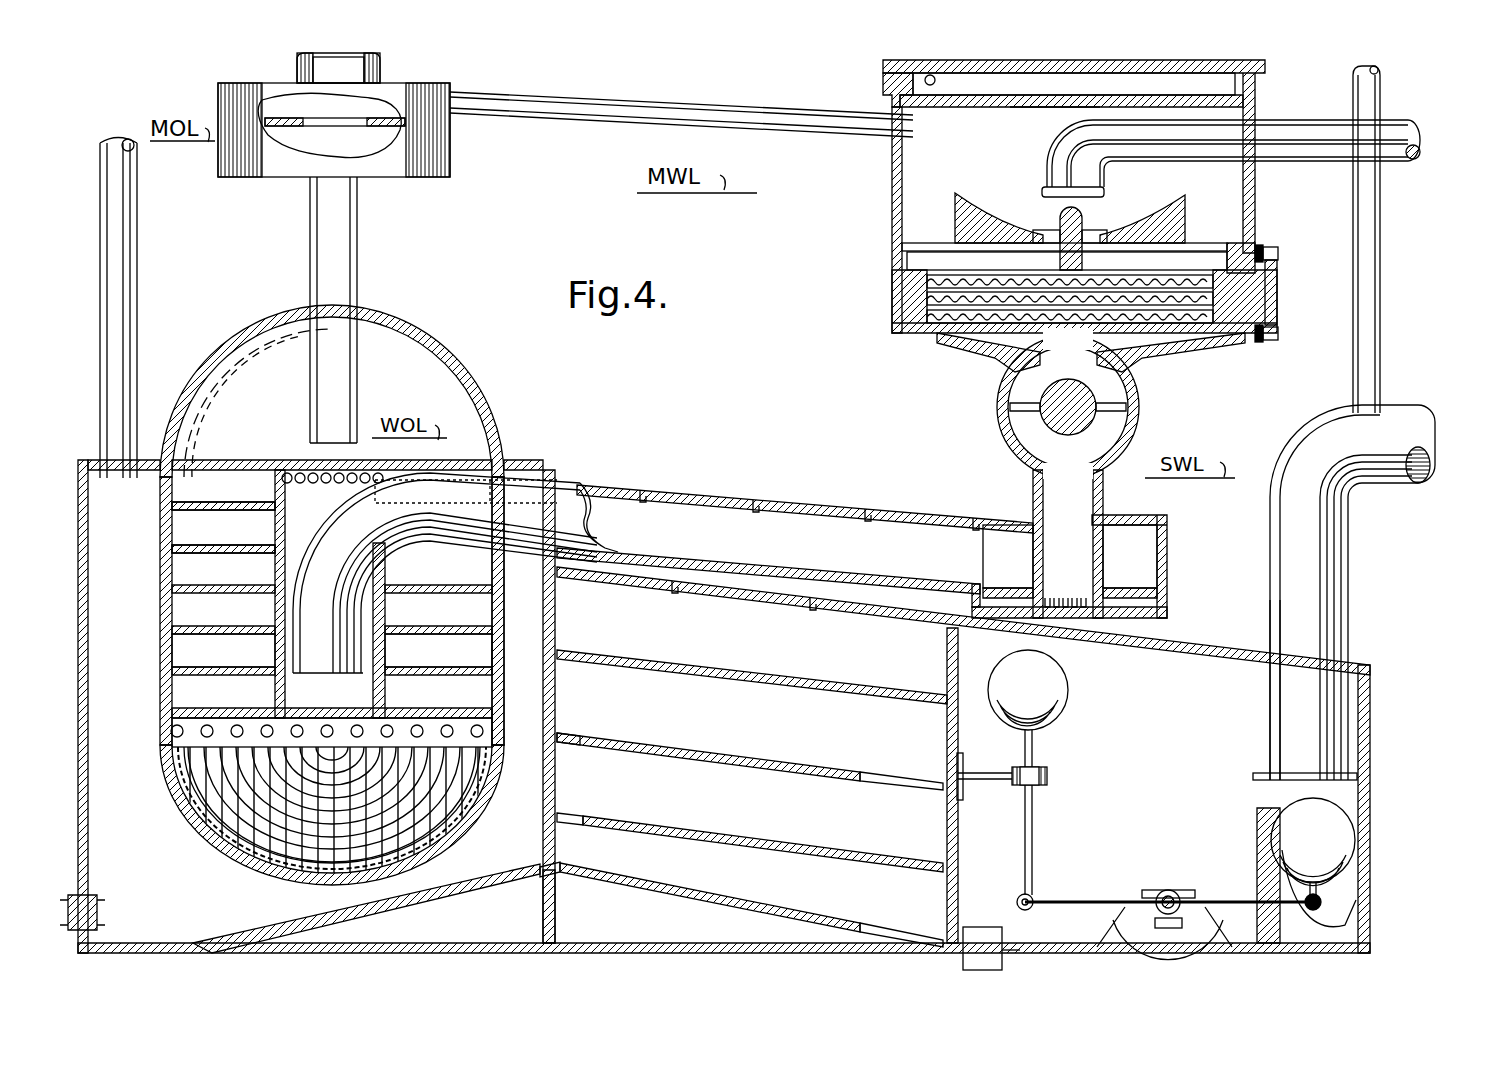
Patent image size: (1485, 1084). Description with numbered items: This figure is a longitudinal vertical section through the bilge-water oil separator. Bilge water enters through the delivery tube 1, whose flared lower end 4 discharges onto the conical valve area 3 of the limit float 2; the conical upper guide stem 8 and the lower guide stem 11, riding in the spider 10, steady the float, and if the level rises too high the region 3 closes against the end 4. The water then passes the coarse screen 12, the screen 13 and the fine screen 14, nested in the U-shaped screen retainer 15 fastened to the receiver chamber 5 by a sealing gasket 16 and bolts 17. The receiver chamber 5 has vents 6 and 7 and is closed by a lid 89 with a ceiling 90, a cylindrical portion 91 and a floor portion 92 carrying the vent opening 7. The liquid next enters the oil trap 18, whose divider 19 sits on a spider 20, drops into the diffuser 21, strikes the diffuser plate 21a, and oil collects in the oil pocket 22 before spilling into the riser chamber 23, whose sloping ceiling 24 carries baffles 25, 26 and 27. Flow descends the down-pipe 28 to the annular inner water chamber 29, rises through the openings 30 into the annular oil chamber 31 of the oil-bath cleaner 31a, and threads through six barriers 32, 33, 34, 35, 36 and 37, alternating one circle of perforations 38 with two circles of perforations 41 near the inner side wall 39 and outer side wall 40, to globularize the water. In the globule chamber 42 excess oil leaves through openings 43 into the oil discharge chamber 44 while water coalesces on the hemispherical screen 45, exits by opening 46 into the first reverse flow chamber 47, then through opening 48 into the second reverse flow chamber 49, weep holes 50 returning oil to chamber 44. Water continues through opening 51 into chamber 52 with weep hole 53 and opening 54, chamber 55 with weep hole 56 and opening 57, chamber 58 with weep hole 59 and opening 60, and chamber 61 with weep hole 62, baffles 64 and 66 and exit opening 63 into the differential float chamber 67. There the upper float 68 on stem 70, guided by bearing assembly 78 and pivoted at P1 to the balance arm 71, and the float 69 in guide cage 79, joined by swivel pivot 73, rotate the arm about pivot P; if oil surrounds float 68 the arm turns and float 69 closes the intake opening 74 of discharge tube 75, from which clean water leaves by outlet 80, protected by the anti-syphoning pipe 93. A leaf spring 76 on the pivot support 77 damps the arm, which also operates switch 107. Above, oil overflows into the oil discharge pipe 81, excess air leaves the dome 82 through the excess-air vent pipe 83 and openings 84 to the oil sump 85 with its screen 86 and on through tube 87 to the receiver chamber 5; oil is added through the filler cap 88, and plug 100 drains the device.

The delivery tube 1 is at (1405, 120).
The limit float 2 is at (1180, 216).
The conical valve area 3 is at (963, 212).
The lower end of delivery tube 4 is at (1095, 190).
The receiver chamber 5 is at (892, 160).
The vent 6 is at (1070, 107).
The vent opening 7 is at (935, 80).
The upper guide stem 8 is at (1058, 216).
The spider 10 is at (945, 243).
The lower guide stem 11 is at (1083, 262).
The coarse screen 12 is at (985, 270).
The screen 13 is at (1150, 292).
The fine screen 14 is at (1088, 323).
The screen retainer 15 is at (1265, 342).
The sealing gasket 16 is at (1265, 246).
The bolts 17 is at (1283, 338).
The oil trap 18 is at (1139, 397).
The divider 19 is at (1075, 436).
The spider 20 is at (1110, 418).
The diffuser 21 is at (1167, 540).
The diffuser plate 21a is at (1167, 612).
The oil pocket 22 is at (1141, 552).
The riser chamber 23 is at (919, 565).
The sloping ceiling 24 is at (920, 520).
The baffle 25 is at (862, 527).
The baffle 26 is at (755, 516).
The baffle 27 is at (646, 510).
The down-pipe 28 is at (335, 673).
The annular inner water chamber 29 is at (318, 702).
The openings 30 is at (328, 484).
The annular oil chamber 31 is at (436, 662).
The oil-bath water cleaner 31a is at (505, 452).
The first barrier 32 is at (265, 502).
The second barrier 33 is at (268, 545).
The third barrier 34 is at (236, 585).
The fourth barrier 35 is at (267, 626).
The fifth barrier 36 is at (203, 667).
The sixth barrier 37 is at (233, 708).
The perforations 38 is at (444, 586).
The inner side wall 39 is at (285, 515).
The outer side wall 40 is at (160, 612).
The perforations 41 is at (456, 626).
The globule chamber 42 is at (300, 770).
The openings 43 is at (172, 735).
The oil discharge chamber 44 is at (177, 858).
The hemispherical screen 45 is at (176, 792).
The exit opening 46 is at (282, 926).
The first reverse flow chamber 47 is at (444, 926).
The exit opening 48 is at (543, 912).
The second reverse flow chamber 49 is at (609, 922).
The weep holes 50 is at (572, 865).
The exit opening 51 is at (910, 930).
The chamber 52 is at (769, 888).
The weep hole 53 is at (545, 822).
The exit flow opening 54 is at (646, 832).
The chamber 55 is at (712, 808).
The weep hole 56 is at (557, 738).
The exit opening 57 is at (900, 780).
The chamber 58 is at (727, 728).
The weep hole 59 is at (543, 665).
The exit opening 60 is at (640, 660).
The chamber 61 is at (747, 660).
The weep hole 62 is at (557, 572).
The exit opening 63 is at (947, 667).
The baffle 64 is at (672, 605).
The baffle 66 is at (808, 625).
The differential float chamber 67 is at (1155, 755).
The upper float 68 is at (1066, 680).
The float 69 is at (1320, 801).
The stem 70 is at (1032, 803).
The balance arm 71 is at (1095, 897).
The swivel pivot 73 is at (1313, 910).
The intake opening 74 is at (1258, 781).
The discharge tube 75 is at (1270, 710).
The leaf spring 76 is at (1110, 905).
The pivot support 77 is at (1148, 925).
The bearing assembly 78 is at (1052, 770).
The guide cage 79 is at (1257, 838).
The outlet 80 is at (1430, 428).
The oil discharge pipe 81 is at (138, 262).
The dome 82 is at (280, 428).
The excess-air vent pipe 83 is at (357, 262).
The openings 84 is at (441, 458).
The excess-air vent oil sump 85 is at (280, 177).
The screen 86 is at (285, 126).
The tube 87 is at (525, 115).
The oil filler cap 88 is at (380, 66).
The lid 89 is at (1167, 92).
The ceiling 90 is at (983, 60).
The cylindrical portion 91 is at (883, 75).
The floor portion 92 is at (958, 107).
The anti-syphoning pipe 93 is at (1381, 221).
The plug 100 is at (97, 908).
The switch 107 is at (1010, 925).
The pivot P is at (1175, 878).
The pivot P1 is at (1015, 906).